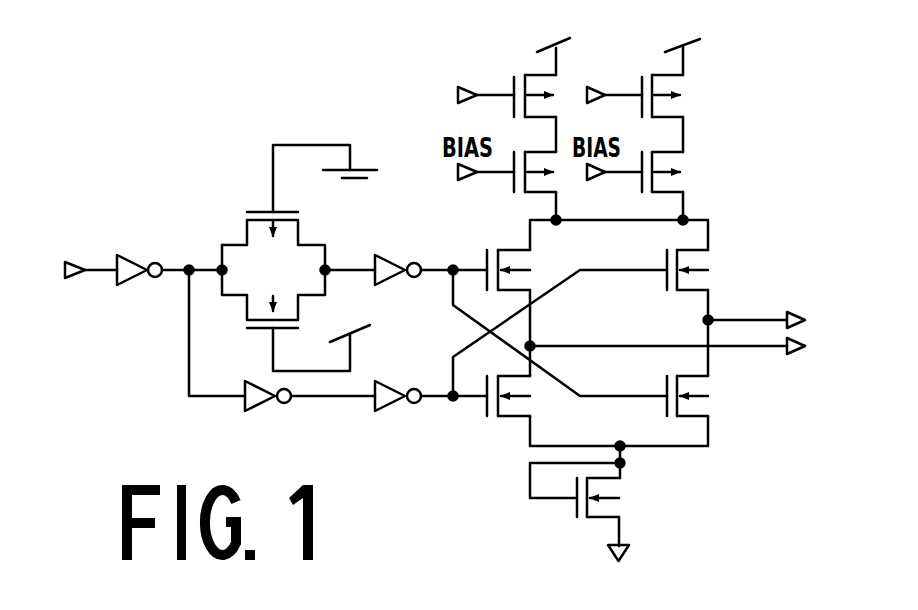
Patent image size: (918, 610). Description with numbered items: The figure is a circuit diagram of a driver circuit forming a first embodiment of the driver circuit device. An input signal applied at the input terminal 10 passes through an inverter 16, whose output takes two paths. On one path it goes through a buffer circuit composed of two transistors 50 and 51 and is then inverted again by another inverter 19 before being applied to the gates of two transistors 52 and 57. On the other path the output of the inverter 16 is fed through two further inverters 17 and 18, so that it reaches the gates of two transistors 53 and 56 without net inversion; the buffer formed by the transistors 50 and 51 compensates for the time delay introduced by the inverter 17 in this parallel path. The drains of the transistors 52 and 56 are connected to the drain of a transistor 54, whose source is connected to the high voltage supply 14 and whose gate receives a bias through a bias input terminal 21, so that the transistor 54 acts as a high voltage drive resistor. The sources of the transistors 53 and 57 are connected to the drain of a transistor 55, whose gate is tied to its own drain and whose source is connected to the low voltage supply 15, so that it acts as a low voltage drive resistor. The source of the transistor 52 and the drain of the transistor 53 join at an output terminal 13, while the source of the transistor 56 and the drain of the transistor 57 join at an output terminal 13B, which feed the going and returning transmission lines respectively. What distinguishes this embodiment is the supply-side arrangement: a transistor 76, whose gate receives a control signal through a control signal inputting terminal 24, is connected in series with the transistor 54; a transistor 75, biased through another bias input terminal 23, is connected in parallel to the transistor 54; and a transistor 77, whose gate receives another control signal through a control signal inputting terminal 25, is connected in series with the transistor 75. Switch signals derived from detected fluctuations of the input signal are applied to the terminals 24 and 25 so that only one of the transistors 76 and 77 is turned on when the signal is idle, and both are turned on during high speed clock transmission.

The input terminal 10 is at (69, 264).
The output terminal 13 is at (800, 353).
The output terminal 13B is at (800, 311).
The high voltage supply 14 is at (350, 323).
The low voltage supply 15 is at (362, 166).
The inverter 16 is at (136, 258).
The inverter 17 is at (263, 407).
The inverter 18 is at (395, 407).
The inverter 19 is at (389, 257).
The bias input terminal 21 is at (457, 173).
The bias input terminal 23 is at (591, 182).
The control signal inputting terminal 24 is at (456, 96).
The control signal inputting terminal 25 is at (591, 88).
The transistor 50 is at (241, 231).
The transistor 51 is at (242, 307).
The transistor 52 is at (526, 261).
The transistor 53 is at (530, 402).
The transistor 54 is at (530, 196).
The transistor 55 is at (615, 490).
The transistor 56 is at (706, 262).
The transistor 57 is at (712, 393).
The transistor 75 is at (683, 183).
The transistor 76 is at (530, 72).
The transistor 77 is at (727, 83).